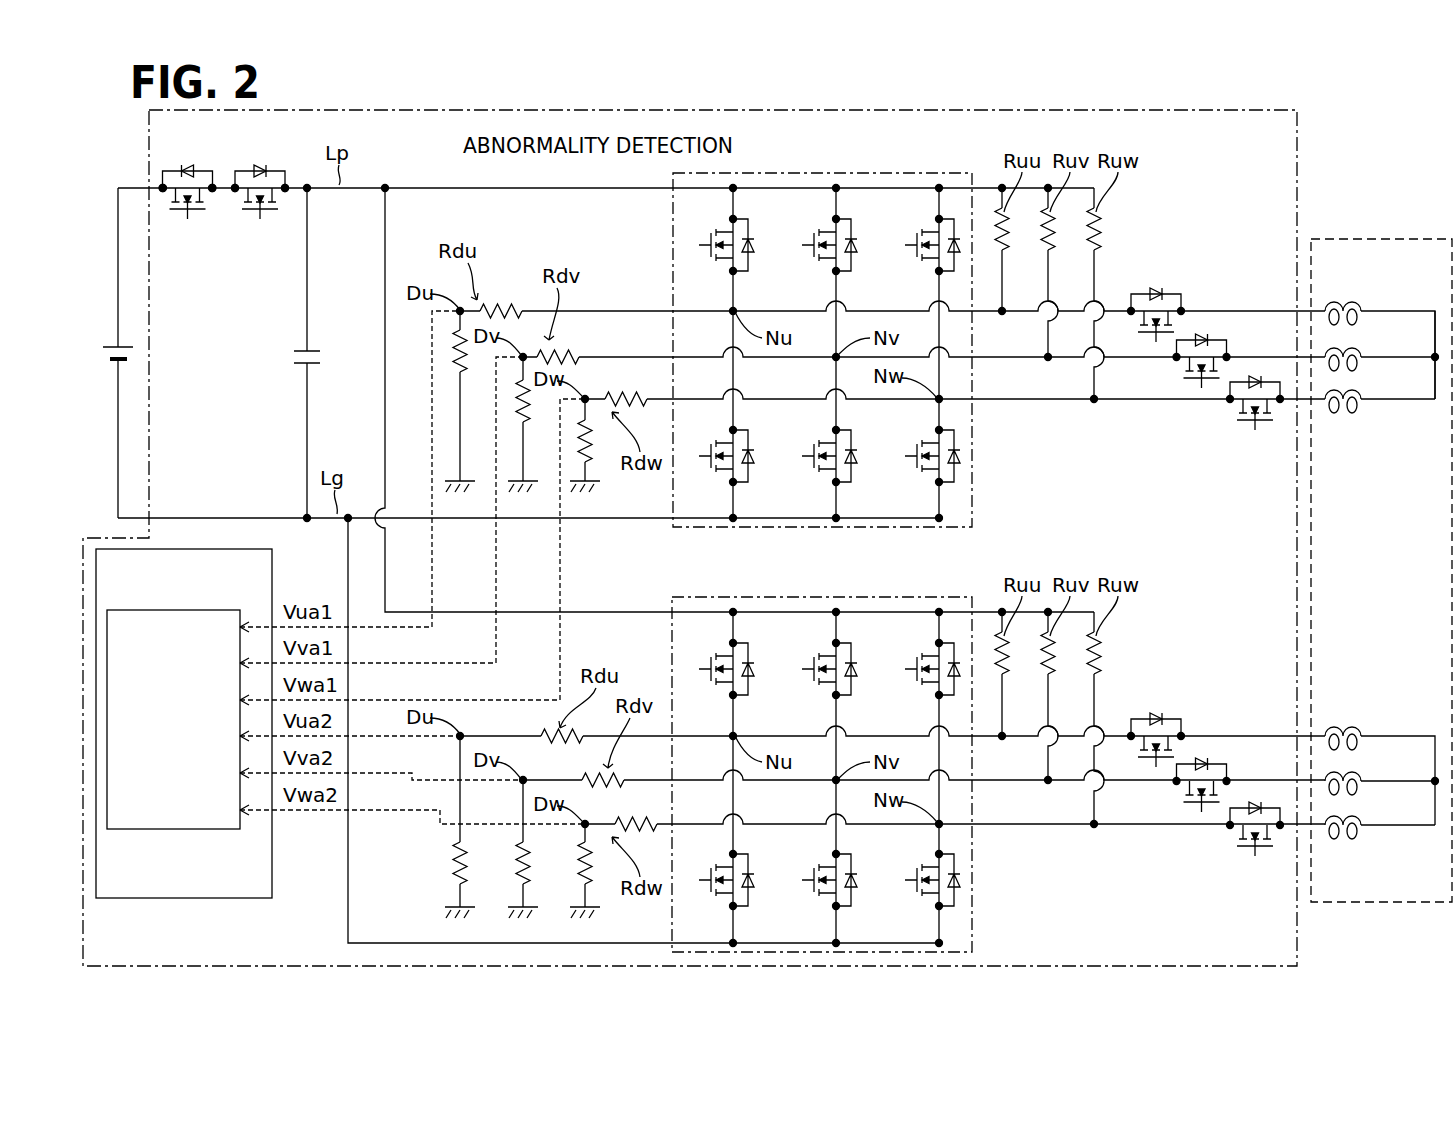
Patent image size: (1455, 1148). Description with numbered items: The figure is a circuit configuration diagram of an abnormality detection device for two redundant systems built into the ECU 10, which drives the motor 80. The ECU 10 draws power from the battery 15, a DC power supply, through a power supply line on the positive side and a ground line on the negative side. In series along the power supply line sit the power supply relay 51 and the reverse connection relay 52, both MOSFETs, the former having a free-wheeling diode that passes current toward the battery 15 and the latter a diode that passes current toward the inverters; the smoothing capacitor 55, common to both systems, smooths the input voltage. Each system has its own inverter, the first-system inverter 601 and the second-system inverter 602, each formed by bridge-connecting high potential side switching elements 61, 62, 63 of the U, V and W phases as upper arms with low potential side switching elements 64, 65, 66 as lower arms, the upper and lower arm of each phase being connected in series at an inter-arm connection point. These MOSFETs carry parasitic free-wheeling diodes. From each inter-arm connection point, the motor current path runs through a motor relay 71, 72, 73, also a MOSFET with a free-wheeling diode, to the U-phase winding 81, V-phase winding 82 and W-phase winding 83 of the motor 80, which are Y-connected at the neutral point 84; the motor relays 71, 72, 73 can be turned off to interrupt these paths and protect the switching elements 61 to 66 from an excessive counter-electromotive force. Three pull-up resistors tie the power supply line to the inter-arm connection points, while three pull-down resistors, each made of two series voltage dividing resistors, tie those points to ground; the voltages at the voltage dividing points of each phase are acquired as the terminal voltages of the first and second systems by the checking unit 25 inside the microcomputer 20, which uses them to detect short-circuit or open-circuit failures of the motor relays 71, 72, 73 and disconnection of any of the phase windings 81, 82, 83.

The ECU 10 is at (1300, 129).
The battery 15 is at (112, 346).
The microcomputer 20 is at (183, 898).
The checking unit 25 is at (176, 610).
The power supply relay 51 is at (185, 216).
The reverse connection relay 52 is at (258, 216).
The smoothing capacitor 55 is at (301, 346).
The high potential side switching element 61 is at (722, 234).
The high potential side switching element 62 is at (825, 234).
The high potential side switching element 63 is at (927, 234).
The low potential side switching element 64 is at (722, 448).
The low potential side switching element 65 is at (825, 448).
The low potential side switching element 66 is at (927, 448).
The motor relay 71 is at (1165, 296).
The motor relay 72 is at (1213, 341).
The motor relay 73 is at (1229, 409).
The motor 80 is at (1375, 238).
The U-phase winding 81 is at (1346, 304).
The V-phase winding 82 is at (1344, 352).
The W-phase winding 83 is at (1344, 420).
The neutral point 84 is at (1433, 360).
The inverter 601 is at (872, 172).
The inverter 602 is at (880, 596).